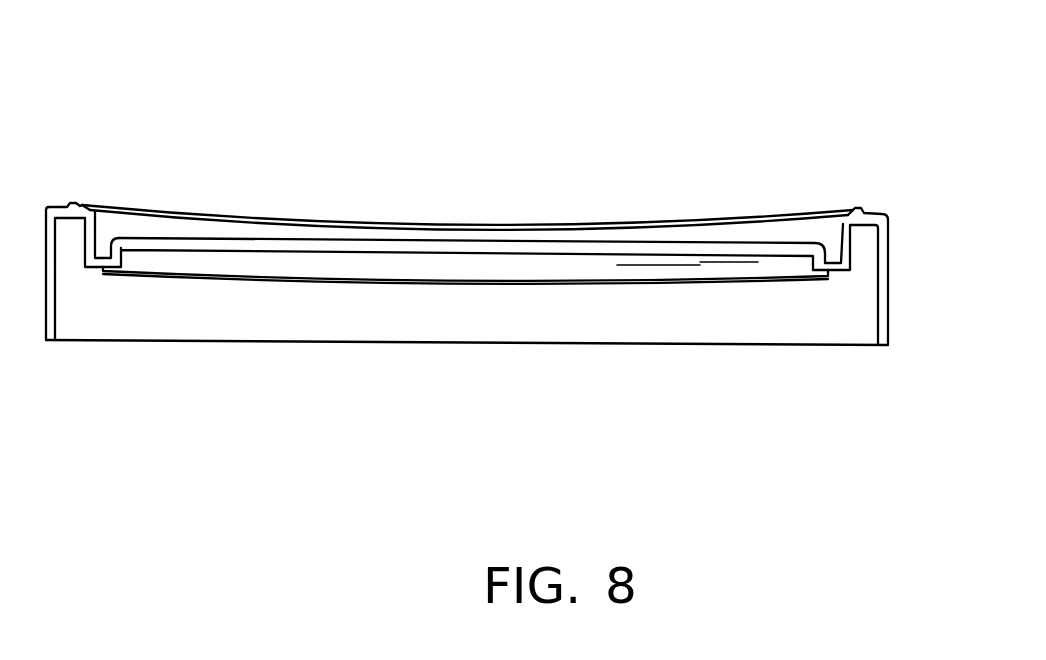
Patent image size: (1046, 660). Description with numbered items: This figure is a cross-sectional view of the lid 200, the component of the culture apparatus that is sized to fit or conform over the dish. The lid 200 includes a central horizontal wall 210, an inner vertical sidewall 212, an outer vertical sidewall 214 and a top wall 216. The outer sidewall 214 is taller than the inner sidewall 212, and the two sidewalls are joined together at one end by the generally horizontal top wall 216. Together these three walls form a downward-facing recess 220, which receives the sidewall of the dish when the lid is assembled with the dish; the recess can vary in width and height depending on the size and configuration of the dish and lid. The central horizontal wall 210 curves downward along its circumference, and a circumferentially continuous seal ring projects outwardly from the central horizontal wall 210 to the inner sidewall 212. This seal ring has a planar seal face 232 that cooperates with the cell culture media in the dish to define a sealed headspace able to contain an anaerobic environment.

The lid 200 is at (118, 78).
The central horizontal wall 210 is at (433, 240).
The inner vertical sidewall 212 is at (95, 238).
The outer vertical sidewall 214 is at (890, 287).
The top wall 216 is at (842, 213).
The downward-facing recess 220 is at (856, 265).
The planar seal face 232 is at (103, 272).